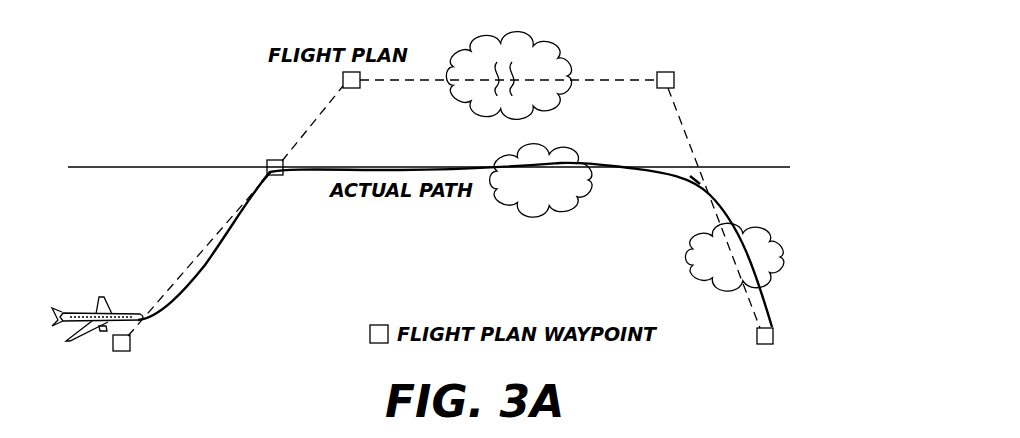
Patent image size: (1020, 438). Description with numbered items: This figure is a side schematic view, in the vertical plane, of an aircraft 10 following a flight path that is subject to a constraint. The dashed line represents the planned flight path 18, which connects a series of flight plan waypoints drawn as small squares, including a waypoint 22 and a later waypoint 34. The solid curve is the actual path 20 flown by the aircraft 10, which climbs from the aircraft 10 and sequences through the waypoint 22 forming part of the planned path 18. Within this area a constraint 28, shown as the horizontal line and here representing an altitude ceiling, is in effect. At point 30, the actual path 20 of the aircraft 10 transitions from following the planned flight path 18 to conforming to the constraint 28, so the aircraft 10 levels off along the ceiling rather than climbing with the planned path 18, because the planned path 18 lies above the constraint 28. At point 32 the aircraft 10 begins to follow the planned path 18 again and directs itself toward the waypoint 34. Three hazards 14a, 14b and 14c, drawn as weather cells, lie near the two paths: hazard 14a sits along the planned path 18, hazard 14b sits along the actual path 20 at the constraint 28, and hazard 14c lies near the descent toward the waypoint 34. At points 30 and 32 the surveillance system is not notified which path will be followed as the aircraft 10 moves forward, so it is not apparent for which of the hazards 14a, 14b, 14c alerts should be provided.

The aircraft 10 is at (84, 311).
The hazard 14a is at (556, 42).
The hazard 14b is at (512, 213).
The hazard 14c is at (777, 234).
The planned flight path 18 is at (201, 234).
The actual path 20 is at (205, 273).
The waypoint 22 is at (272, 160).
The constraint 28 is at (122, 170).
The transition point 30 is at (265, 183).
The transition point 32 is at (684, 183).
The waypoint 34 is at (774, 341).